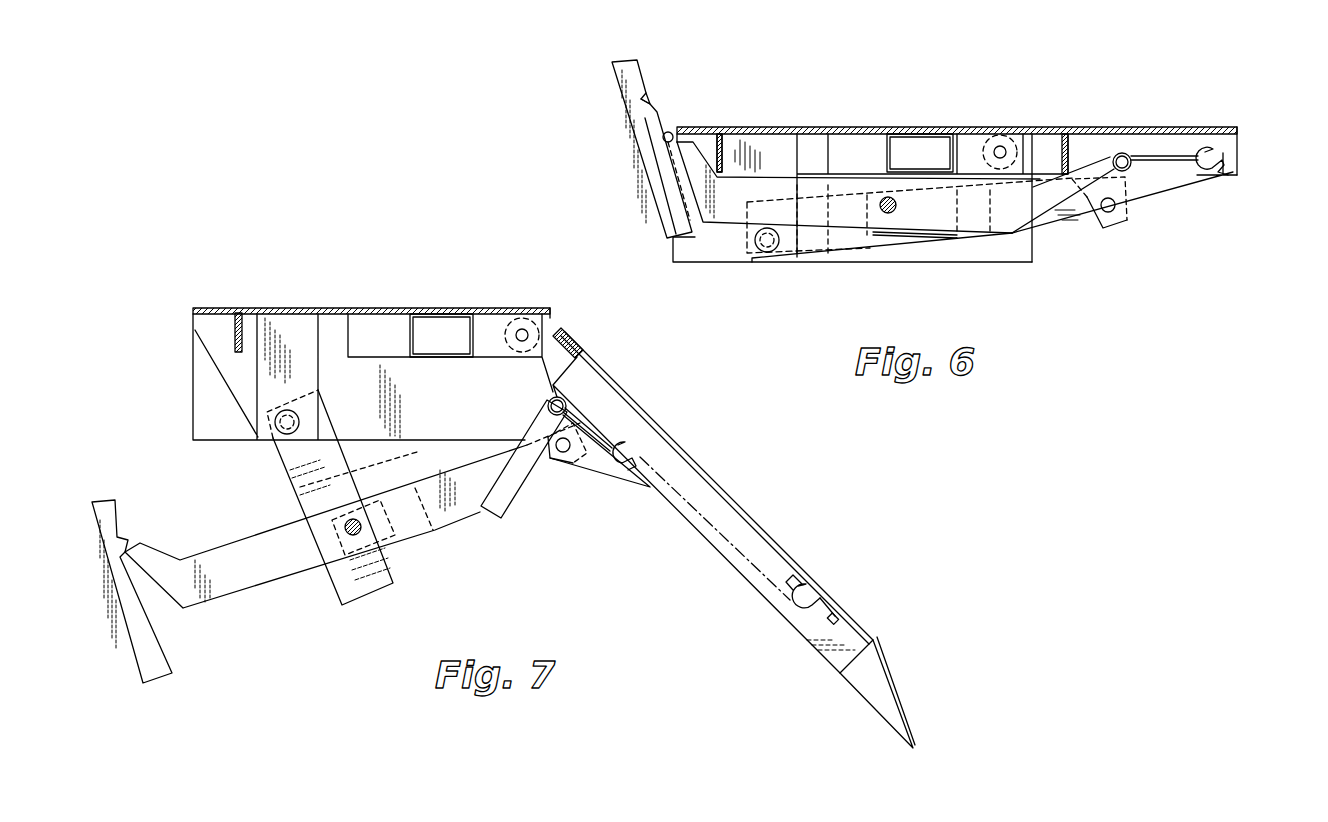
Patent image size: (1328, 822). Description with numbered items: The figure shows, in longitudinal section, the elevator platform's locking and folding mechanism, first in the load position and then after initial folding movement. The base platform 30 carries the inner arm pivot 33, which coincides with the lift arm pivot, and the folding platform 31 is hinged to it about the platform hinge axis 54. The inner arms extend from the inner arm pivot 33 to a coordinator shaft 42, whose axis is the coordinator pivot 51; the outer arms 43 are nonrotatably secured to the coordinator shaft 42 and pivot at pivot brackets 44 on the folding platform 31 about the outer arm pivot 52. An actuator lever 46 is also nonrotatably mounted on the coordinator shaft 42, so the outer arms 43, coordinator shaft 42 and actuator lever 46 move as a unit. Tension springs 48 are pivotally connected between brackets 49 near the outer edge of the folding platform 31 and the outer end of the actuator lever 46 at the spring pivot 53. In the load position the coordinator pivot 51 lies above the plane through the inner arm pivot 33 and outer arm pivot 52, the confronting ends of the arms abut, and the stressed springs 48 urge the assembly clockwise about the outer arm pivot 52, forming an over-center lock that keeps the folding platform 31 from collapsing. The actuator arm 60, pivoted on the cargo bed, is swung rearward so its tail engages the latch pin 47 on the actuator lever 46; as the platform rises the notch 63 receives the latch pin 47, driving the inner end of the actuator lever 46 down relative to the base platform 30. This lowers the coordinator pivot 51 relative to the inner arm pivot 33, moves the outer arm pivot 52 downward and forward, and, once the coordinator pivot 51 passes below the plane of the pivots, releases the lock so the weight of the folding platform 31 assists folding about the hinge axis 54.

In FIG. 6, the base platform 30 is at (868, 118).
In FIG. 7, the base platform 30 is at (345, 302).
In FIG. 6, the folding platform 31 is at (1160, 122).
In FIG. 7, the folding platform 31 is at (797, 555).
In FIG. 6, the inner arm pivot 33 is at (765, 252).
In FIG. 7, the inner arm pivot 33 is at (280, 430).
In FIG. 6, the coordinator shaft 42 is at (848, 242).
In FIG. 7, the coordinator shaft 42 is at (308, 490).
In FIG. 6, the outer arms 43 is at (1072, 225).
In FIG. 7, the outer arms 43 is at (513, 483).
In FIG. 6, the pivot brackets 44 is at (1163, 190).
In FIG. 7, the pivot brackets 44 is at (600, 447).
In FIG. 6, the actuator lever 46 is at (732, 190).
In FIG. 7, the actuator lever 46 is at (244, 580).
In FIG. 6, the latch pin 47 is at (671, 131).
In FIG. 6, the tension springs 48 is at (1228, 160).
In FIG. 7, the brackets 49 is at (805, 612).
In FIG. 6, the coordinator pivot 51 is at (896, 212).
In FIG. 7, the coordinator pivot 51 is at (363, 532).
In FIG. 6, the outer arm pivot 52 is at (1110, 215).
In FIG. 7, the outer arm pivot 52 is at (566, 452).
In FIG. 6, the spring pivot 53 is at (1120, 152).
In FIG. 7, the spring pivot 53 is at (547, 404).
In FIG. 6, the platform hinge axis 54 is at (1000, 146).
In FIG. 7, the platform hinge axis 54 is at (522, 329).
In FIG. 6, the actuator arm 60 is at (648, 160).
In FIG. 7, the actuator arm 60 is at (125, 582).
In FIG. 6, the notch 63 is at (648, 97).